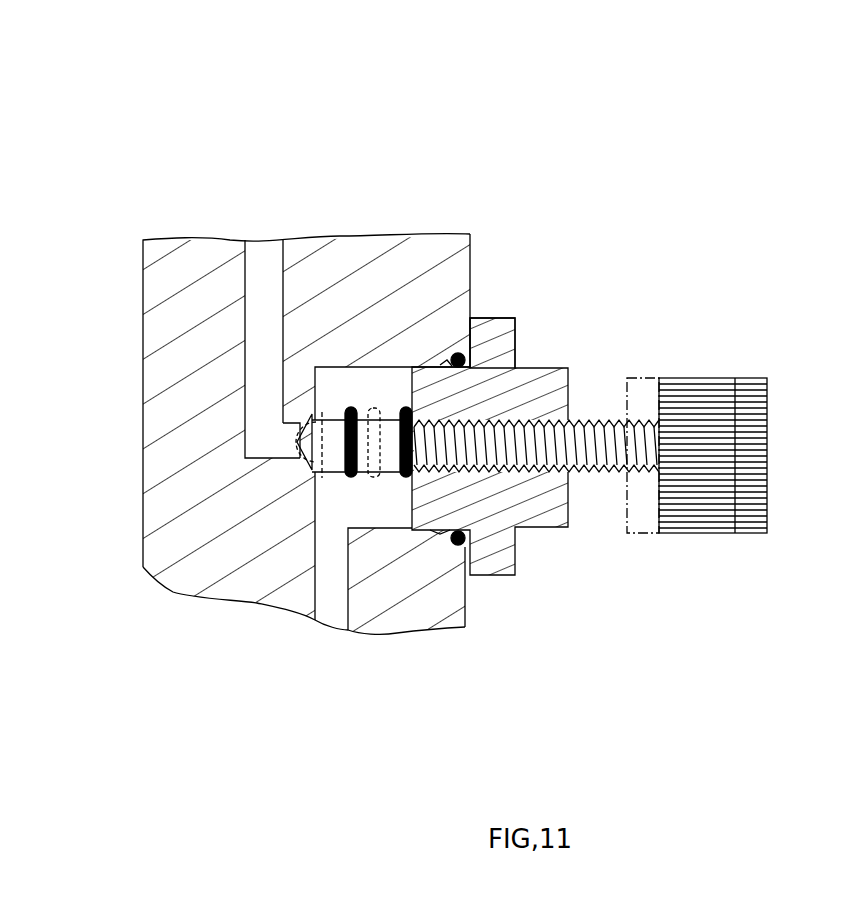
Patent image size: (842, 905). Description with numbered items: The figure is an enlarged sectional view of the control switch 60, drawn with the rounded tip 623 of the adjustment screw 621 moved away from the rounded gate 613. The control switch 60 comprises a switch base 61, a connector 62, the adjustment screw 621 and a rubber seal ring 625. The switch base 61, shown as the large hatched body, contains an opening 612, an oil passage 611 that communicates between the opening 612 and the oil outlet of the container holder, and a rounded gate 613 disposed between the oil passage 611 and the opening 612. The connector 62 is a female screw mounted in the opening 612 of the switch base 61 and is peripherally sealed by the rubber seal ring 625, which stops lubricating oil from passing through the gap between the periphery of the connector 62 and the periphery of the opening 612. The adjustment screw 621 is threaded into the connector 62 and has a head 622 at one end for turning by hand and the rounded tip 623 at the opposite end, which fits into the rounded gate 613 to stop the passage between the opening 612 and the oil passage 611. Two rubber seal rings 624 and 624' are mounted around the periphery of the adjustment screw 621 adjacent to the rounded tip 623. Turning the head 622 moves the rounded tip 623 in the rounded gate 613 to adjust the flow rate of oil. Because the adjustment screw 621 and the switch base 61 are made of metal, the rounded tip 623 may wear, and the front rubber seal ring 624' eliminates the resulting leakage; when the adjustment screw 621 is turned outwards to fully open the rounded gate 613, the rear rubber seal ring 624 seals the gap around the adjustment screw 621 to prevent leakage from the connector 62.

The control switch 60 is at (668, 168).
The switch base 61 is at (190, 345).
The oil passage 611 is at (268, 255).
The opening 612 is at (335, 608).
The rounded gate 613 is at (302, 460).
The connector 62 is at (543, 508).
The adjustment screw 621 is at (603, 420).
The head 622 is at (715, 388).
The rounded tip 623 is at (352, 408).
The rear rubber seal ring 624 is at (529, 323).
The front rubber seal ring 624' is at (497, 293).
The rubber seal ring 625 is at (460, 547).